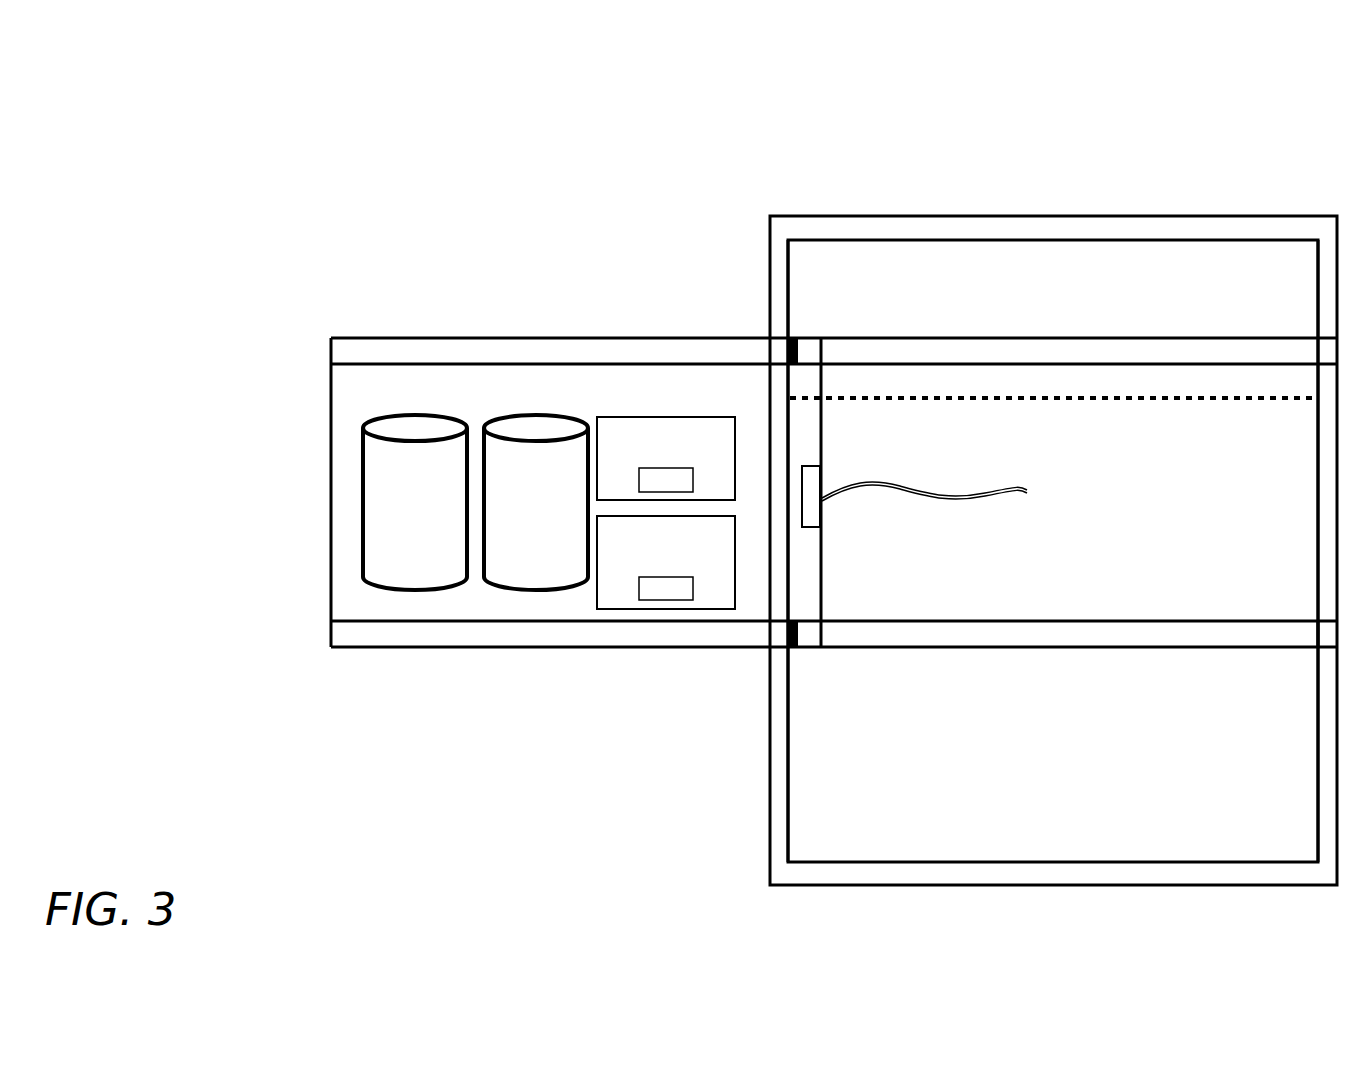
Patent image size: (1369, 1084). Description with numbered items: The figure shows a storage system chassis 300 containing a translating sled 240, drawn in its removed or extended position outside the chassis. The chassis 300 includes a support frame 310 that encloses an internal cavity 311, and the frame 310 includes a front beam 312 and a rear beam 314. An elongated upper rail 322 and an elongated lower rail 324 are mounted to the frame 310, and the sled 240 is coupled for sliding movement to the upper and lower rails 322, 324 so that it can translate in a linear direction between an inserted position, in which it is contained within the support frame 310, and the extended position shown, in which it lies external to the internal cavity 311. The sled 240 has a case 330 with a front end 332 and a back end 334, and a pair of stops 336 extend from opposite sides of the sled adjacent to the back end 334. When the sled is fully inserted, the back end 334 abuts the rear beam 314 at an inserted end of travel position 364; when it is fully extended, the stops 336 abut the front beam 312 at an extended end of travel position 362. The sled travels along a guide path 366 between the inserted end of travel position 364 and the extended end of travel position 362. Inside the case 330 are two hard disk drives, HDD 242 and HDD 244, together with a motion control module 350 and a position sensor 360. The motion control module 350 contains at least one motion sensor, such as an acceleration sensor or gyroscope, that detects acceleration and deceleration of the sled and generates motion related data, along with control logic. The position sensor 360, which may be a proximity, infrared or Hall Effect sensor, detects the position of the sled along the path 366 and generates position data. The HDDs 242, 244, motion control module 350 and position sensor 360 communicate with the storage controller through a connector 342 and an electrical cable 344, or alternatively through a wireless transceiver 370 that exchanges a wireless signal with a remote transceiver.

The storage system chassis 300 is at (405, 120).
The support frame 310 is at (1119, 212).
The internal cavity 311 is at (1053, 551).
The front beam 312 is at (795, 746).
The rear beam 314 is at (1315, 748).
The upper rail 322 is at (1012, 336).
The lower rail 324 is at (1043, 651).
The case 330 is at (328, 397).
The front end 332 is at (328, 585).
The back end 334 is at (823, 582).
The stops 336 is at (806, 641).
The connector 342 is at (811, 463).
The electrical cable 344 is at (942, 487).
The motion control module 350 is at (666, 562).
The position sensor 360 is at (666, 458).
The extended end of travel position 362 is at (786, 638).
The inserted end of travel position 364 is at (1315, 646).
The guide path 366 is at (1152, 402).
The wireless transceiver 370 is at (666, 480).
The sled 1 240 is at (479, 492).
The HDD 242 is at (415, 502).
The HDD 244 is at (536, 502).